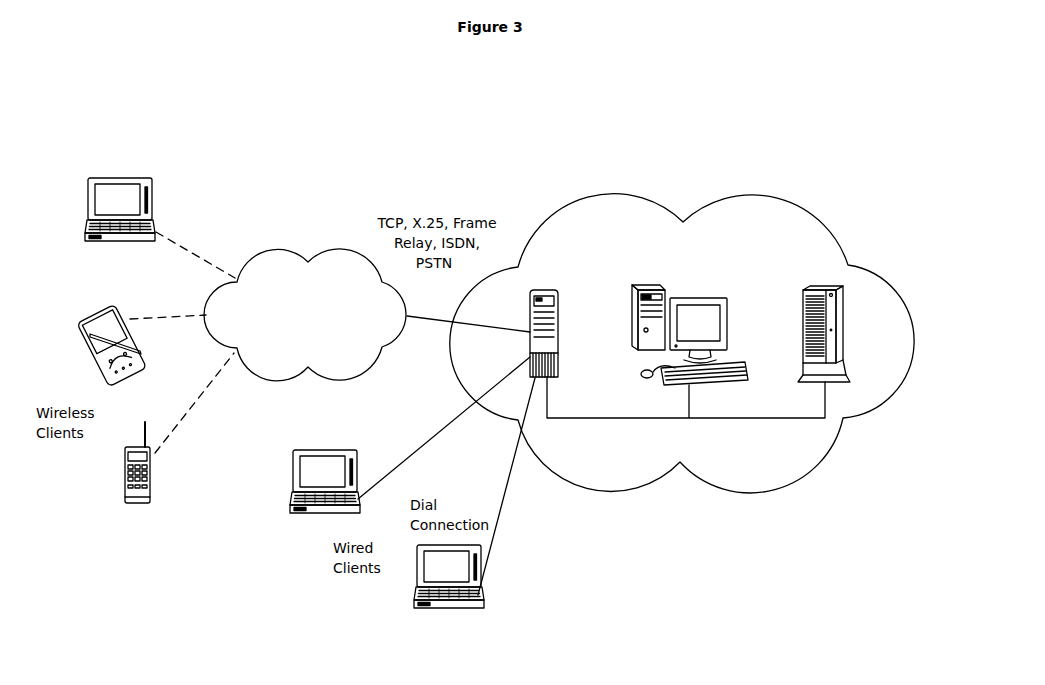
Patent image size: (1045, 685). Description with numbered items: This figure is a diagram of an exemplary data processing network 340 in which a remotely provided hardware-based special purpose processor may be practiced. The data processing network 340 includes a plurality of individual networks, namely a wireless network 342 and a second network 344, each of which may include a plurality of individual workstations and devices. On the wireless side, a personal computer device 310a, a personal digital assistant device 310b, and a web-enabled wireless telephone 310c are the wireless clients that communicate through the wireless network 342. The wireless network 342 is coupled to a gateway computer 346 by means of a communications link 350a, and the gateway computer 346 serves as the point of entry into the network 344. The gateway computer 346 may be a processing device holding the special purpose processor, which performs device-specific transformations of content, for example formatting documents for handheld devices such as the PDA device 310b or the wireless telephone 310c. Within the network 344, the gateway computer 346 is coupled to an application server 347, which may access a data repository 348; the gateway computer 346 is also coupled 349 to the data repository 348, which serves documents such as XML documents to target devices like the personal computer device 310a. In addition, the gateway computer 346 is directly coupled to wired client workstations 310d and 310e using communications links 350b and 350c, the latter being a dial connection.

The data processing network 340 is at (819, 590).
The wireless network 342 is at (263, 250).
The network 344 is at (576, 192).
The gateway computer 346 is at (560, 306).
The application server 347 is at (656, 285).
The data repository 348 is at (846, 318).
The coupling 349 is at (756, 420).
The communications link 350a is at (444, 322).
The communications link 350b is at (414, 466).
The communications link 350c is at (505, 527).
The personal computer device 310a is at (155, 194).
The personal digital assistant (PDA) device 310b is at (145, 368).
The web-enabled wireless telephone 310c is at (153, 483).
The workstation 310d is at (322, 449).
The workstation 310e is at (411, 600).